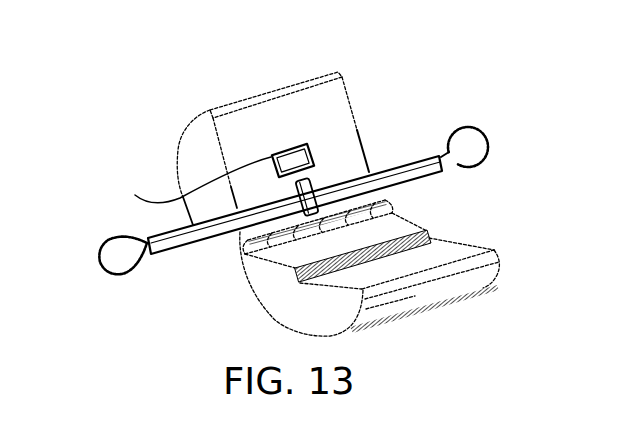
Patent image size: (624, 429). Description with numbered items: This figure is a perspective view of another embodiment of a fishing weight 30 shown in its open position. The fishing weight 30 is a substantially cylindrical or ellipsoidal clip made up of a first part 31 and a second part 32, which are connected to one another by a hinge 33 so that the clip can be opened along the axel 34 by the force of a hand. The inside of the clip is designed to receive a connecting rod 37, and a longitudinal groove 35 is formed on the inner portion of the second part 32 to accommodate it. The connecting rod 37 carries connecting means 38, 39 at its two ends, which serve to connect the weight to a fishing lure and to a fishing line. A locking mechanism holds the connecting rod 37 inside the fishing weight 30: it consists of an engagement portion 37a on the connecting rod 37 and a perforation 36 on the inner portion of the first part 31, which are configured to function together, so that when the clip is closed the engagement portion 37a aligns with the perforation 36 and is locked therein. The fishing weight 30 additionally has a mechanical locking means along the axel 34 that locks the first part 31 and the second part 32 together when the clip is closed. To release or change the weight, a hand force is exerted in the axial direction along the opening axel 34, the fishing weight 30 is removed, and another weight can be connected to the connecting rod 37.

The fishing weight 30 is at (157, 99).
The first part 31 is at (214, 108).
The second part 32 is at (472, 278).
The hinge 33 is at (243, 252).
The axel 34 is at (498, 250).
The longitudinal groove 35 is at (292, 278).
The perforation 36 is at (186, 180).
The connecting rod 37 is at (436, 175).
The engagement portion 37a is at (313, 175).
The connecting means 38 is at (110, 230).
The connecting means 39 is at (490, 142).